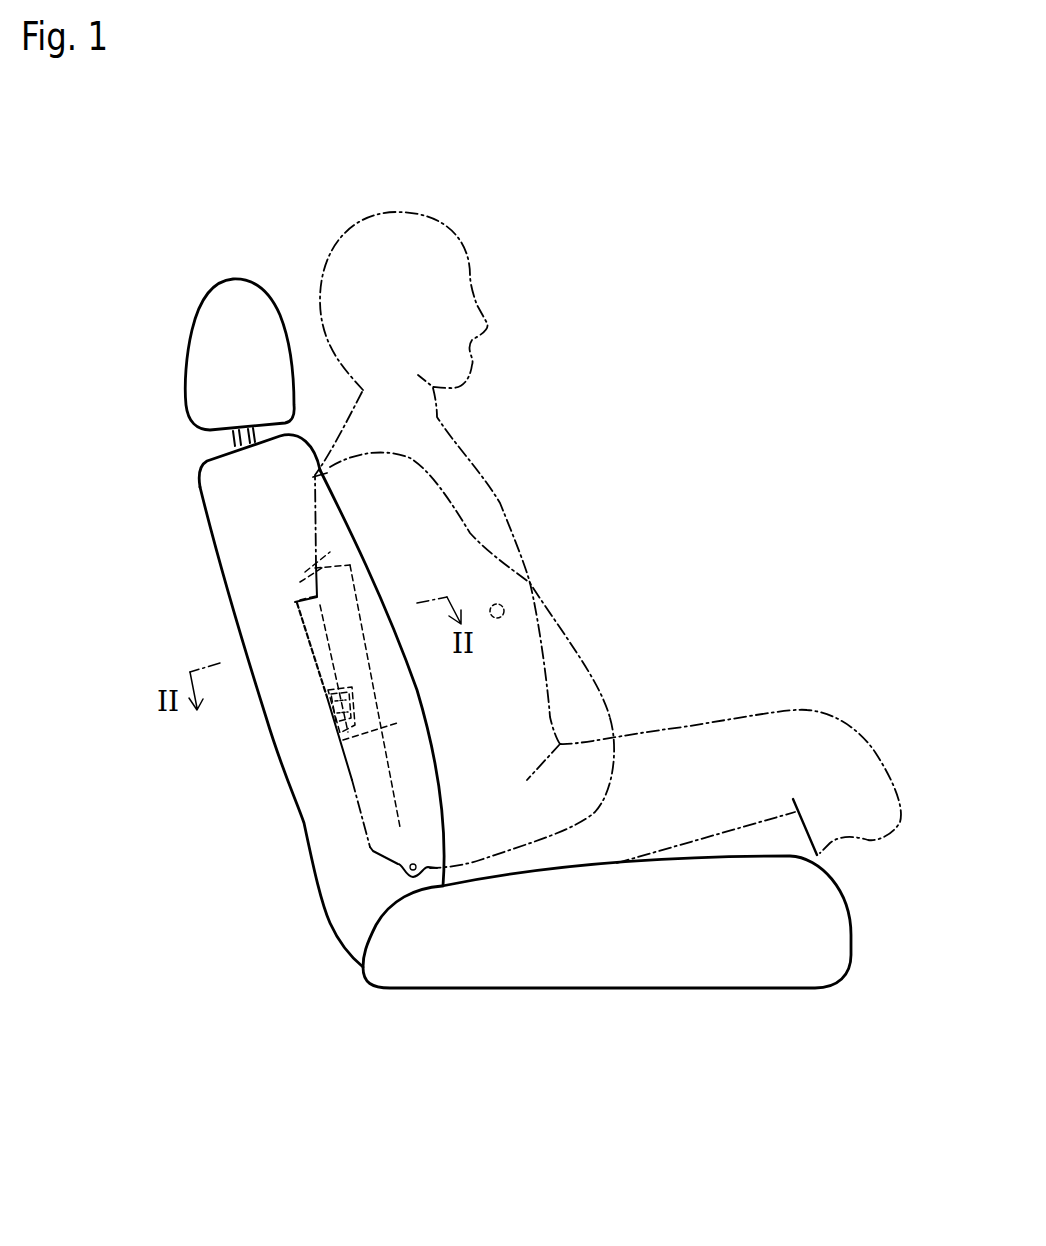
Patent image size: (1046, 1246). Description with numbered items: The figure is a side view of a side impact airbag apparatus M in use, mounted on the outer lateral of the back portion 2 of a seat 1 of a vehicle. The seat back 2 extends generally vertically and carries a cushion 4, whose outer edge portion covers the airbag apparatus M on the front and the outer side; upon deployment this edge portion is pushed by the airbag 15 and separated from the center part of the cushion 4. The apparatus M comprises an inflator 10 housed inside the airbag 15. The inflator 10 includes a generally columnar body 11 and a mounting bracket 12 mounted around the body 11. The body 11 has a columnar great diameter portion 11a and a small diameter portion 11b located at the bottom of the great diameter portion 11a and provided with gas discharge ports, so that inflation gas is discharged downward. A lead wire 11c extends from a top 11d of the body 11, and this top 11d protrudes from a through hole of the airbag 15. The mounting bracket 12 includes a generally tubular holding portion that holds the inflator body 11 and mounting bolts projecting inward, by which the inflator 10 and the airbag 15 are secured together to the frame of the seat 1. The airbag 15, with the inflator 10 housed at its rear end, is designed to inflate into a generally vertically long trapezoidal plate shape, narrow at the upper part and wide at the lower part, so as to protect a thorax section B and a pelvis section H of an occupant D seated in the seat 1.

The seat 1 is at (307, 935).
The seat back 2 is at (270, 750).
The cushion 4 is at (430, 807).
The inflator 10 is at (180, 538).
The inflator body 11 is at (300, 593).
The great diameter portion 11a is at (327, 700).
The small diameter portion 11b is at (343, 742).
The lead wire 11c is at (332, 548).
The top of the body 11d is at (316, 589).
The mounting bracket 12 is at (305, 630).
The airbag 15 is at (667, 582).
The side impact airbag apparatus M is at (367, 750).
The occupant D is at (503, 262).
The thorax section B is at (455, 492).
The pelvis section H is at (607, 712).